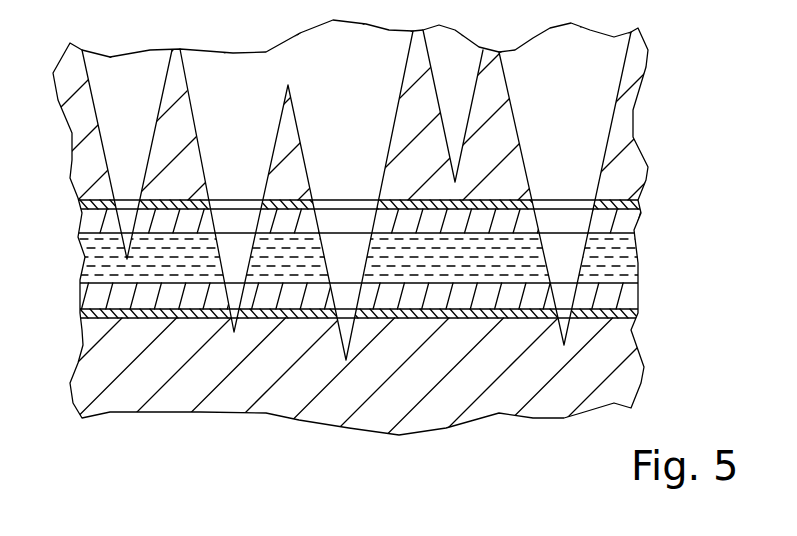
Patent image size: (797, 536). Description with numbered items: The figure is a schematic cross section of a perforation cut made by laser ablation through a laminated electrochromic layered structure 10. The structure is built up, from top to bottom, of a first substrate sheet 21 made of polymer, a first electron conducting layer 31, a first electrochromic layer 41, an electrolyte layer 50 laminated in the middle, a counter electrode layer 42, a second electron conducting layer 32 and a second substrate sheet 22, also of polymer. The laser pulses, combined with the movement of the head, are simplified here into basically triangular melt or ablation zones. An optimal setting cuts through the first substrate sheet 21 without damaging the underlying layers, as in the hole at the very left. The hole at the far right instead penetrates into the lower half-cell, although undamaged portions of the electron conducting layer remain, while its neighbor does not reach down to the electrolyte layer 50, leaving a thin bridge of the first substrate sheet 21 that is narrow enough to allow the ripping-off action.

The laminated electrochromic layered structure 10 is at (207, 432).
The first substrate sheet 21 is at (83, 173).
The second substrate sheet 22 is at (85, 343).
The first electron conducting layer 31 is at (82, 203).
The second electron conducting layer 32 is at (82, 313).
The first electrochromic layer 41 is at (82, 224).
The counter electrode layer 42 is at (82, 295).
The electrolyte layer 50 is at (82, 260).